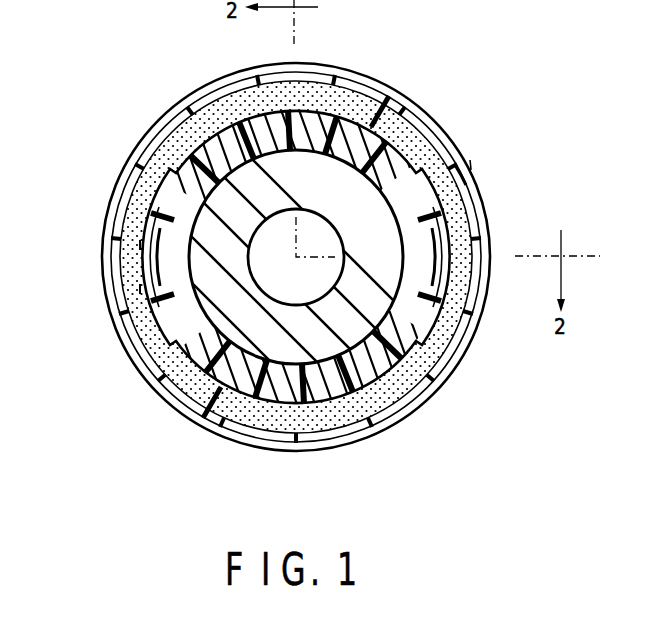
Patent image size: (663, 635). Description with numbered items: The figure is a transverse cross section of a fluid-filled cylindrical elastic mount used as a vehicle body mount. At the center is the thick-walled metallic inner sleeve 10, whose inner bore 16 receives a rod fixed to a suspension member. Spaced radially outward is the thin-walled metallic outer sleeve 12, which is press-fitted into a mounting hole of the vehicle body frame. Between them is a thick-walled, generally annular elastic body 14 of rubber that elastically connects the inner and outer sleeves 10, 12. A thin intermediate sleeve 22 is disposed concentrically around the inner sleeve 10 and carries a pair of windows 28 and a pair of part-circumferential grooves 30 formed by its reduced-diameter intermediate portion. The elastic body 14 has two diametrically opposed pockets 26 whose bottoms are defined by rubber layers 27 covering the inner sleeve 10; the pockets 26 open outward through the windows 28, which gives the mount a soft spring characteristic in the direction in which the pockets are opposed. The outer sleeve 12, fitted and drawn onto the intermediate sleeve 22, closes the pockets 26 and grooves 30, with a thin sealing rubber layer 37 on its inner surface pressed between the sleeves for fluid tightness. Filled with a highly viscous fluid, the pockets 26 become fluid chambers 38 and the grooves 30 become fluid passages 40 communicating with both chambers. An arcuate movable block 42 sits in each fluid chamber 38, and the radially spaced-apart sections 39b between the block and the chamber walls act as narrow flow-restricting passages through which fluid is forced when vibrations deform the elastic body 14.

The inner sleeve 10 is at (280, 322).
The outer sleeve 12 is at (418, 98).
The elastic body 14 is at (465, 205).
The inner bore 16 is at (292, 212).
The intermediate sleeve 22 is at (138, 245).
The pocket 26 is at (160, 152).
The rubber layer 27 is at (330, 105).
The window 28 is at (445, 160).
The part-circumferential groove 30 is at (158, 305).
The sealing rubber layer 37 is at (140, 288).
The fluid chamber 38 is at (386, 100).
The radially spaced-apart section 39b is at (255, 88).
The fluid passage 40 is at (152, 225).
The movable block 42 is at (247, 98).